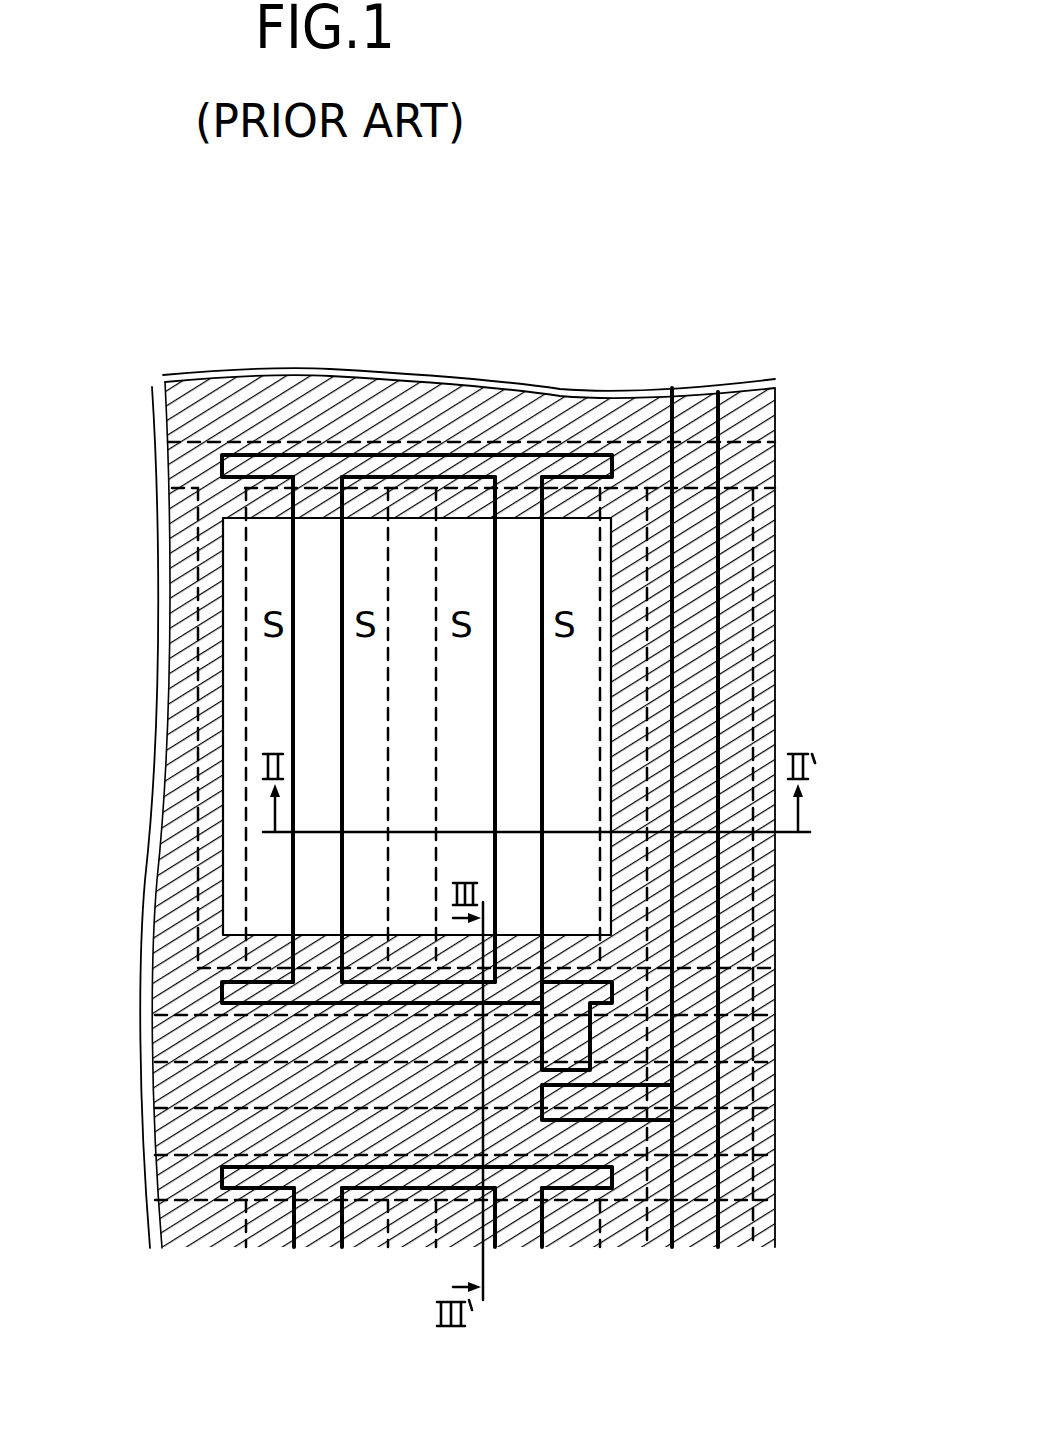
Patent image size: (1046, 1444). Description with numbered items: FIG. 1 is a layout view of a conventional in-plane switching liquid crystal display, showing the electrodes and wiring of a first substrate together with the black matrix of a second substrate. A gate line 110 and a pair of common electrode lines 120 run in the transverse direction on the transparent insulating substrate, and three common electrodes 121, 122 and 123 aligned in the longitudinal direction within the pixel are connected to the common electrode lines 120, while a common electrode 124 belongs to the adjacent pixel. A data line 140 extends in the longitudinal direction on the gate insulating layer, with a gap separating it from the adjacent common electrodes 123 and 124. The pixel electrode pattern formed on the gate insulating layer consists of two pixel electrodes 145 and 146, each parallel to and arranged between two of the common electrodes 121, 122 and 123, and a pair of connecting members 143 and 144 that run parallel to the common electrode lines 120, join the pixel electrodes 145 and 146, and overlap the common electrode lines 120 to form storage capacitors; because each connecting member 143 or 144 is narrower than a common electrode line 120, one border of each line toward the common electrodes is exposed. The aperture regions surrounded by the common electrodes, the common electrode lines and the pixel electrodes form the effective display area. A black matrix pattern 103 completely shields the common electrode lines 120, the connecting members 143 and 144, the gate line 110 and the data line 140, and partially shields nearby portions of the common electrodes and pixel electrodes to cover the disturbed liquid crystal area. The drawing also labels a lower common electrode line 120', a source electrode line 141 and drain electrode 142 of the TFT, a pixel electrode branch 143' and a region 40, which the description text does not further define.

The black matrix pattern 103 is at (222, 858).
The gate line 110 is at (760, 1085).
The common electrode line 120 is at (514, 728).
The common electrode line 120' is at (518, 1176).
The common electrode 121 is at (200, 727).
The common electrode 122 is at (410, 533).
The common electrode 123 is at (647, 560).
The common electrode 124 is at (765, 620).
The data line 140 is at (707, 916).
The source electrode line 141 is at (623, 1125).
The drain electrode 142 is at (590, 1048).
The connecting member 143 is at (417, 1163).
The pixel electrode branch 143' is at (418, 1254).
The connecting member 144 is at (467, 453).
The pixel electrode 145 is at (293, 570).
The pixel electrode 146 is at (540, 737).
The black matrix opening 40 is at (474, 522).
The thin film transistor TFT is at (540, 1083).